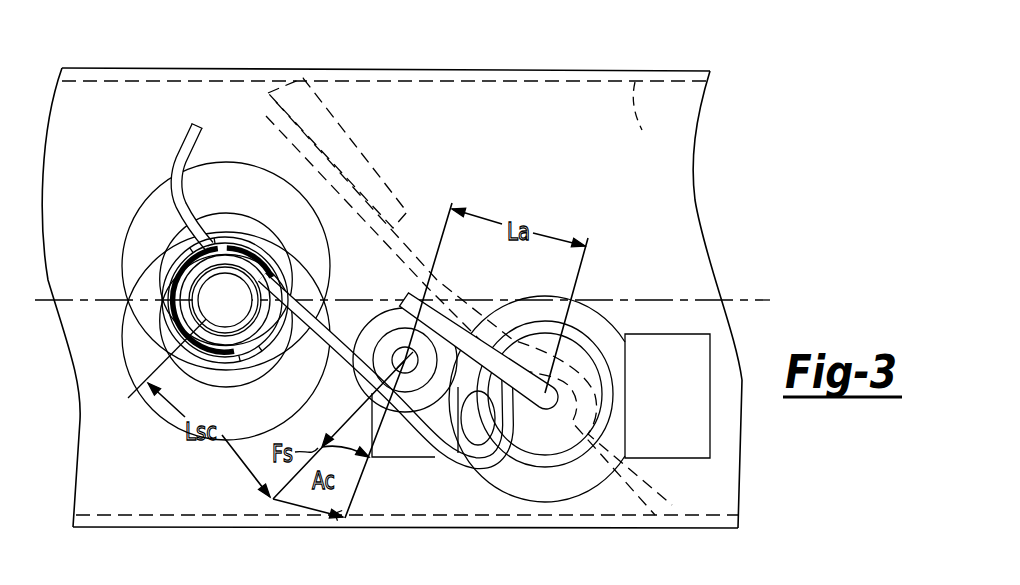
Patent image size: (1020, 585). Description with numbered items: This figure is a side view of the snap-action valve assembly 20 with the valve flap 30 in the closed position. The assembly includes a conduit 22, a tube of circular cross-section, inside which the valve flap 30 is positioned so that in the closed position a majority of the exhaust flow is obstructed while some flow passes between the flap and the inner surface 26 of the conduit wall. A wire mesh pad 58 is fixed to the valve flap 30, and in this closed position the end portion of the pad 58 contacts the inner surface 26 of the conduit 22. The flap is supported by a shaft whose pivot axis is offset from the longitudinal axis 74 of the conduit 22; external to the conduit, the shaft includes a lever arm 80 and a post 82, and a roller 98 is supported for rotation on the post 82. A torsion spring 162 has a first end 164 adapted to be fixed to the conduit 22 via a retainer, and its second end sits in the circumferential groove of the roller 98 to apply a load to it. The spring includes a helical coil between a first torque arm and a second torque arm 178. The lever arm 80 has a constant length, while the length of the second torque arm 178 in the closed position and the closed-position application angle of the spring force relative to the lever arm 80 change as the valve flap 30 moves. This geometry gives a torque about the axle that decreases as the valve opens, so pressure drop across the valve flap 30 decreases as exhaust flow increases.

The snap-action valve assembly 20 is at (718, 215).
The conduit 22 is at (588, 70).
The inner surface 26 is at (639, 122).
The valve flap 30 is at (409, 247).
The pad 58 is at (322, 108).
The longitudinal axis 74 is at (98, 299).
The lever arm 80 is at (508, 383).
The post 82 is at (401, 347).
The roller 98 is at (436, 412).
The torsion spring 162 is at (228, 260).
The first end 164 is at (180, 150).
The second torque arm 178 is at (340, 355).